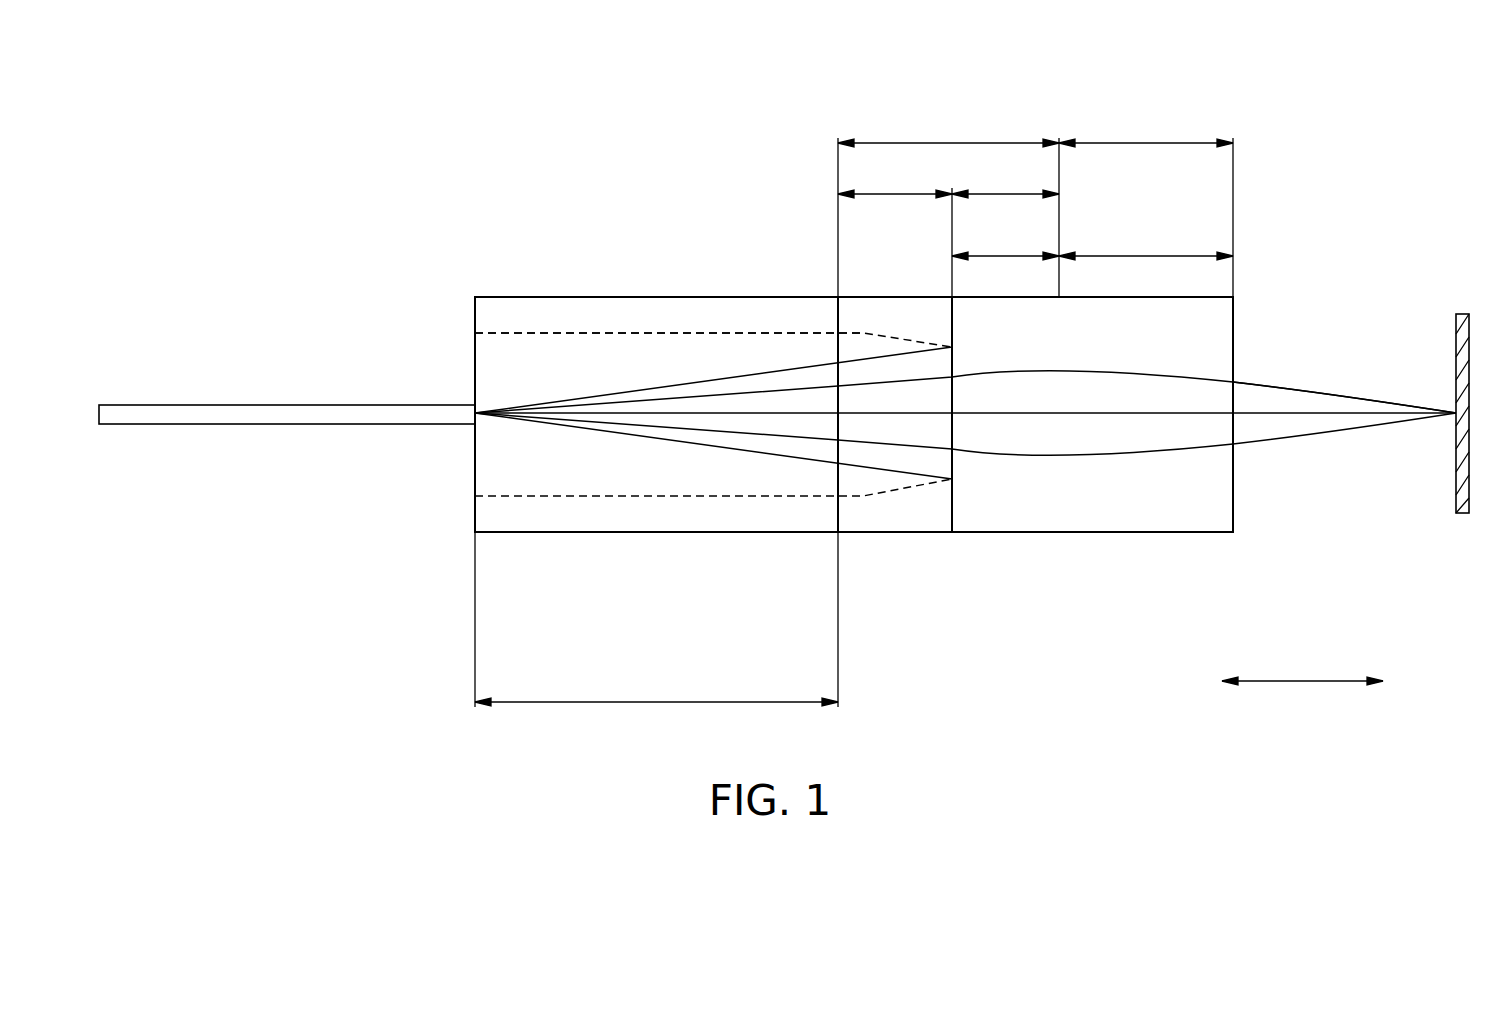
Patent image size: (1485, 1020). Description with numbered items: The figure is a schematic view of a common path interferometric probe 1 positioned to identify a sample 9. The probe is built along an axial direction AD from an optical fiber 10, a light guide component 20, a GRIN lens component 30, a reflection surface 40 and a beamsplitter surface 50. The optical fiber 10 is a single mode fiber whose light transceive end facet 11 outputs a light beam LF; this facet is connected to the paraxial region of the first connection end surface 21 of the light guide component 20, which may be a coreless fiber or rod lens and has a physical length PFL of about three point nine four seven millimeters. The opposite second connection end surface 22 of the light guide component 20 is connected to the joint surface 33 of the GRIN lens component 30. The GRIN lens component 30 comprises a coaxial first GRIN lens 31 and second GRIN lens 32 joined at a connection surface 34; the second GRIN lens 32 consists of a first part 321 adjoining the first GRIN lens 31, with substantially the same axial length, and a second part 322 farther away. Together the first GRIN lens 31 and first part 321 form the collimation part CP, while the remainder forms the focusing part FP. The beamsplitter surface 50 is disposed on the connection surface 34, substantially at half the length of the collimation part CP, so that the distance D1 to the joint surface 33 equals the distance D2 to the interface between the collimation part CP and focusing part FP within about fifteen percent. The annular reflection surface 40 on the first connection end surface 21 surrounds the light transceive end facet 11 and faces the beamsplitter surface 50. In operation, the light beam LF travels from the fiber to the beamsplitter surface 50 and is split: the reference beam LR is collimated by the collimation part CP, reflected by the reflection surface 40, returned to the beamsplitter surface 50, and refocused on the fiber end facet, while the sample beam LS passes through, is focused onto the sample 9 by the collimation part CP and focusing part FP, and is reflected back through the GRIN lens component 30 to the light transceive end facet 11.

The common path interferometric probe 1 is at (150, 82).
The sample 9 is at (1462, 314).
The optical fiber 10 is at (287, 405).
The light transceive end facet 11 is at (477, 408).
The light guide component 20 is at (657, 533).
The first connection end surface 21 is at (474, 481).
The second connection end surface 22 is at (838, 512).
The GRIN lens component 30 is at (1050, 645).
The first GRIN lens 31 is at (880, 535).
The second GRIN lens 32 is at (1037, 535).
The joint surface 33 is at (838, 522).
The connection surface 34 is at (952, 513).
The reflection surface 40 is at (475, 333).
The beamsplitter surface 50 is at (952, 532).
The first part 321 is at (1005, 256).
The second part 322 is at (1145, 256).
The reference beam LR is at (657, 333).
The light beam LF is at (740, 375).
The sample beam LS is at (1345, 398).
The collimation part CP is at (948, 130).
The focusing part FP is at (1146, 130).
The distance from the beamsplitter surface to the joint surface D1 is at (895, 182).
The distance from the beamsplitter surface to the interface between the collimation D2 is at (1005, 182).
The physical length of the light guide component PFL is at (656, 690).
The axial direction AD is at (1302, 696).